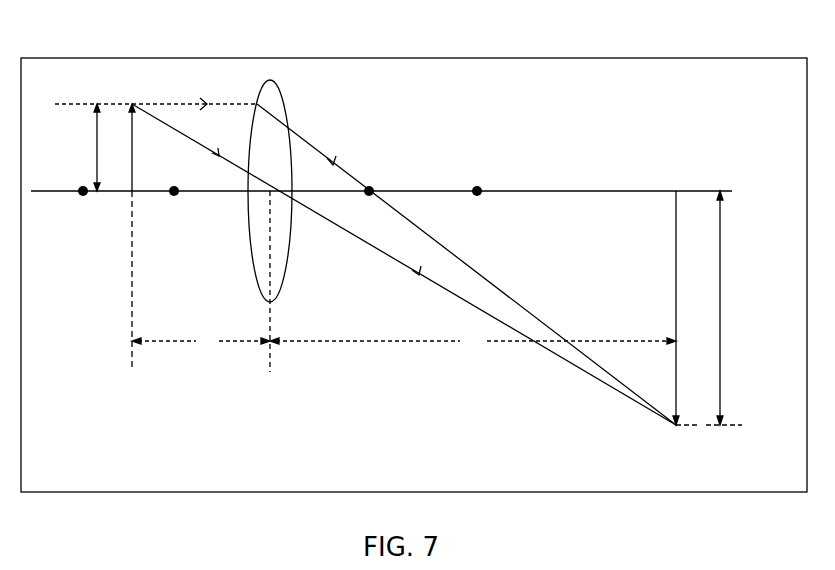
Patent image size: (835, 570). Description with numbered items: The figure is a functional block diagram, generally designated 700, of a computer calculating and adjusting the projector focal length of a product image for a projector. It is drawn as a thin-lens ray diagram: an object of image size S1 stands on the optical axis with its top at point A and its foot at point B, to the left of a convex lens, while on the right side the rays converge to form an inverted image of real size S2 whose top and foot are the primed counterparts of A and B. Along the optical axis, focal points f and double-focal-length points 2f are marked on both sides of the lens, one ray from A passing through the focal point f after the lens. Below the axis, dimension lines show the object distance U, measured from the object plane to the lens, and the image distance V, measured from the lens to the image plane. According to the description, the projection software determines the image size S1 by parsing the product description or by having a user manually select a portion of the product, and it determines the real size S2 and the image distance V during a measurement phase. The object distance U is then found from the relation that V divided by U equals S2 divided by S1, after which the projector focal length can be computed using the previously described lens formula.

The functional block diagram 700 is at (631, 58).
The object point / top of object A is at (371, 267).
The foot of object on optical axis B is at (400, 298).
The focal point f is at (272, 201).
The twice focal length point 2f is at (281, 201).
The image size S1 is at (97, 147).
The real size S2 is at (720, 308).
The object distance U is at (201, 341).
The image distance V is at (473, 341).